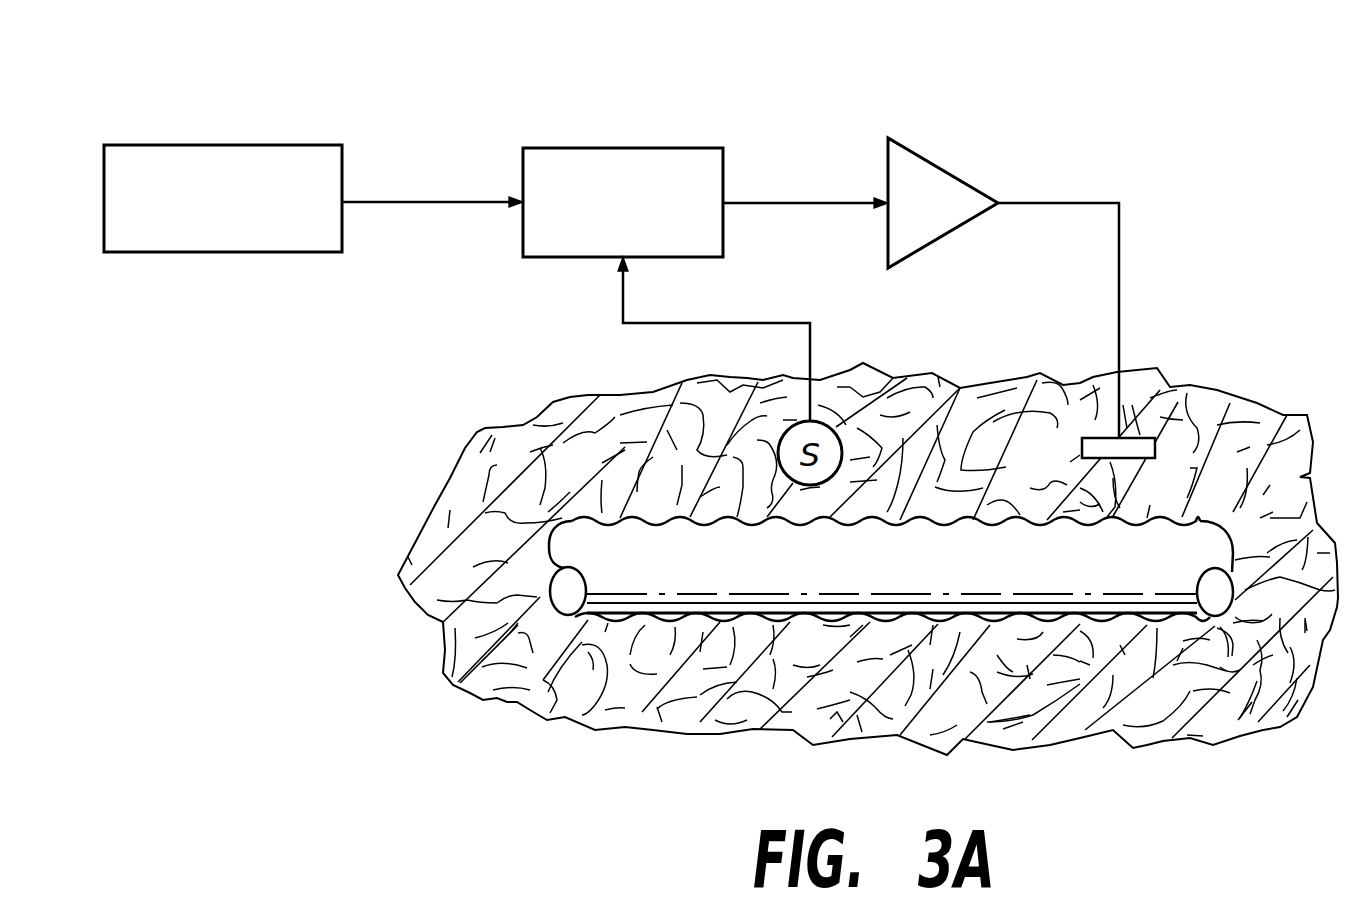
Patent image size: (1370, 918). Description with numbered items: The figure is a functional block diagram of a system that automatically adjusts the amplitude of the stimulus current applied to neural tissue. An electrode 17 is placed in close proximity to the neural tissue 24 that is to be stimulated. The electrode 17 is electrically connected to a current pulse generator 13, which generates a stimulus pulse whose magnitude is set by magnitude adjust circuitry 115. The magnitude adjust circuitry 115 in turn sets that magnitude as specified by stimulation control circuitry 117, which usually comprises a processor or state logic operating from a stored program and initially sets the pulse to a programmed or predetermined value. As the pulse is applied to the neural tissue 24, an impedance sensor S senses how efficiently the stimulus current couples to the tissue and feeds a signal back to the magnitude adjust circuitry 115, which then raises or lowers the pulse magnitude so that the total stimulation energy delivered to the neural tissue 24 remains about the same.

The stimulation control circuitry 117 is at (222, 145).
The magnitude adjust circuitry 115 is at (622, 148).
The current pulse generator 13 is at (942, 169).
The electrode 17 is at (1143, 438).
The neural tissue 24 is at (1129, 620).